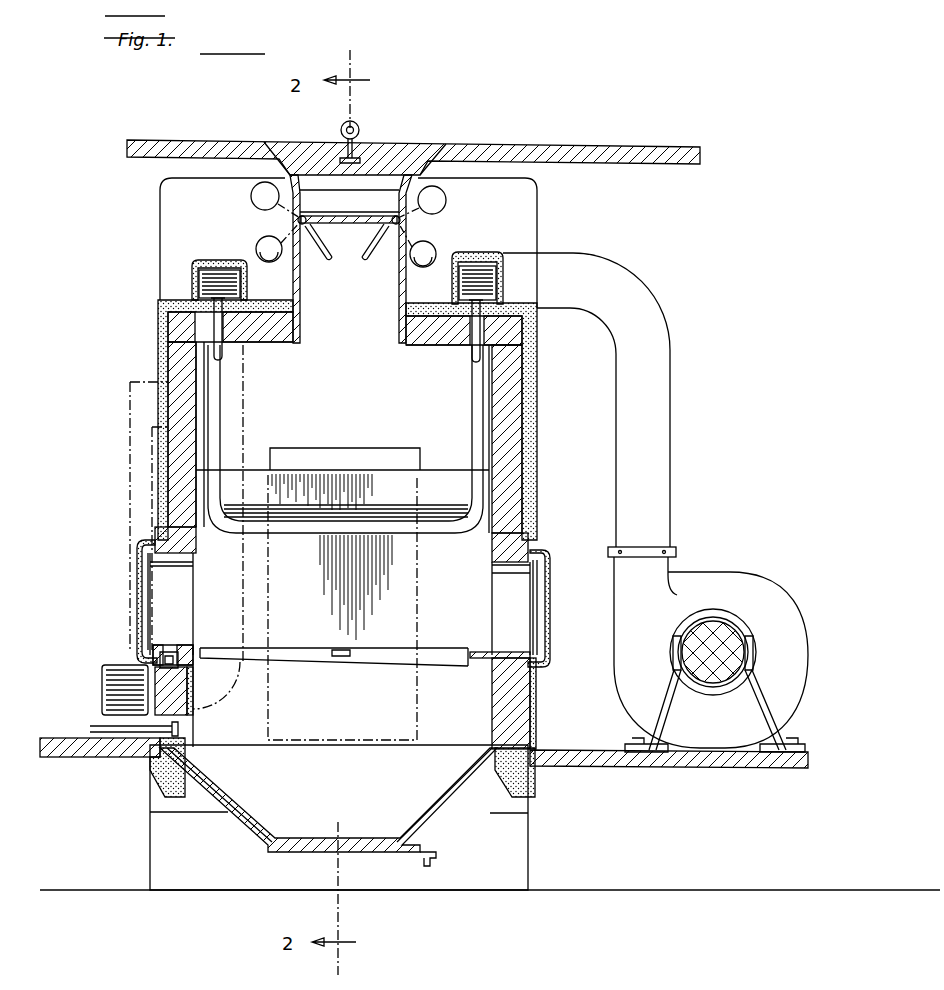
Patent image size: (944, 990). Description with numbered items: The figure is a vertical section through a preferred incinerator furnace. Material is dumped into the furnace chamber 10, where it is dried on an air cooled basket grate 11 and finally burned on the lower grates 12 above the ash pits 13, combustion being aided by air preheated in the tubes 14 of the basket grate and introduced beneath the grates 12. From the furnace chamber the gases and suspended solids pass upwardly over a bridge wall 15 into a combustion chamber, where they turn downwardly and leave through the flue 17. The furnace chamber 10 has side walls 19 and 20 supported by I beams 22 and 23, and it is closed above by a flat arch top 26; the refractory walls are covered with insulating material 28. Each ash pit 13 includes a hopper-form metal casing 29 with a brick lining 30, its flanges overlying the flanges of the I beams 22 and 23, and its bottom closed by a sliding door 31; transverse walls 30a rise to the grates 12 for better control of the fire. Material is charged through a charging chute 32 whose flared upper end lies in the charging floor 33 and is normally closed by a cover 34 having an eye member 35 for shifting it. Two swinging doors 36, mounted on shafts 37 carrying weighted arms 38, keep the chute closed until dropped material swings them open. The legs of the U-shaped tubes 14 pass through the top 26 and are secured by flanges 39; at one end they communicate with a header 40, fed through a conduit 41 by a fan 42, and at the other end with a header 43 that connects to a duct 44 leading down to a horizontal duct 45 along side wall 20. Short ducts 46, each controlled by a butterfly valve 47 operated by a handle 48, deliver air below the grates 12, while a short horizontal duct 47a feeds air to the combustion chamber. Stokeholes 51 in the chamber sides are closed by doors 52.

The furnace chamber 10 is at (284, 434).
The basket grate 11 is at (380, 503).
The lower grates 12 is at (290, 652).
The ash pits 13 is at (339, 817).
The tubes 14 is at (435, 520).
The bridge wall 15 is at (332, 490).
The flue 17 is at (380, 458).
The side wall 19 is at (500, 440).
The side wall 20 is at (185, 455).
The I beam 22 is at (526, 780).
The I beam 23 is at (152, 778).
The flat arch top 26 is at (256, 343).
The insulating material 28 is at (160, 356).
The metal casing 29 is at (248, 836).
The lining 30 is at (265, 830).
The transverse walls 30a is at (344, 697).
The door 31 is at (426, 862).
The charging chute 32 is at (410, 286).
The charging floor 33 is at (235, 143).
The cover 34 is at (410, 152).
The eye member 35 is at (358, 124).
The swinging doors 36 is at (362, 226).
The shafts 37 is at (318, 248).
The weighted arms 38 is at (258, 243).
The flanges 39 is at (206, 288).
The header 40 is at (482, 258).
The conduit 41 is at (660, 348).
The fan 42 is at (738, 590).
The header 43 is at (200, 262).
The duct 44 is at (246, 420).
The horizontal duct 45 is at (100, 688).
The short ducts 46 is at (150, 665).
The butterfly valve 47 is at (178, 696).
The short horizontal duct 47a is at (168, 395).
The handle 48 is at (100, 732).
The stokeholes 51 is at (178, 600).
The doors 52 is at (140, 572).